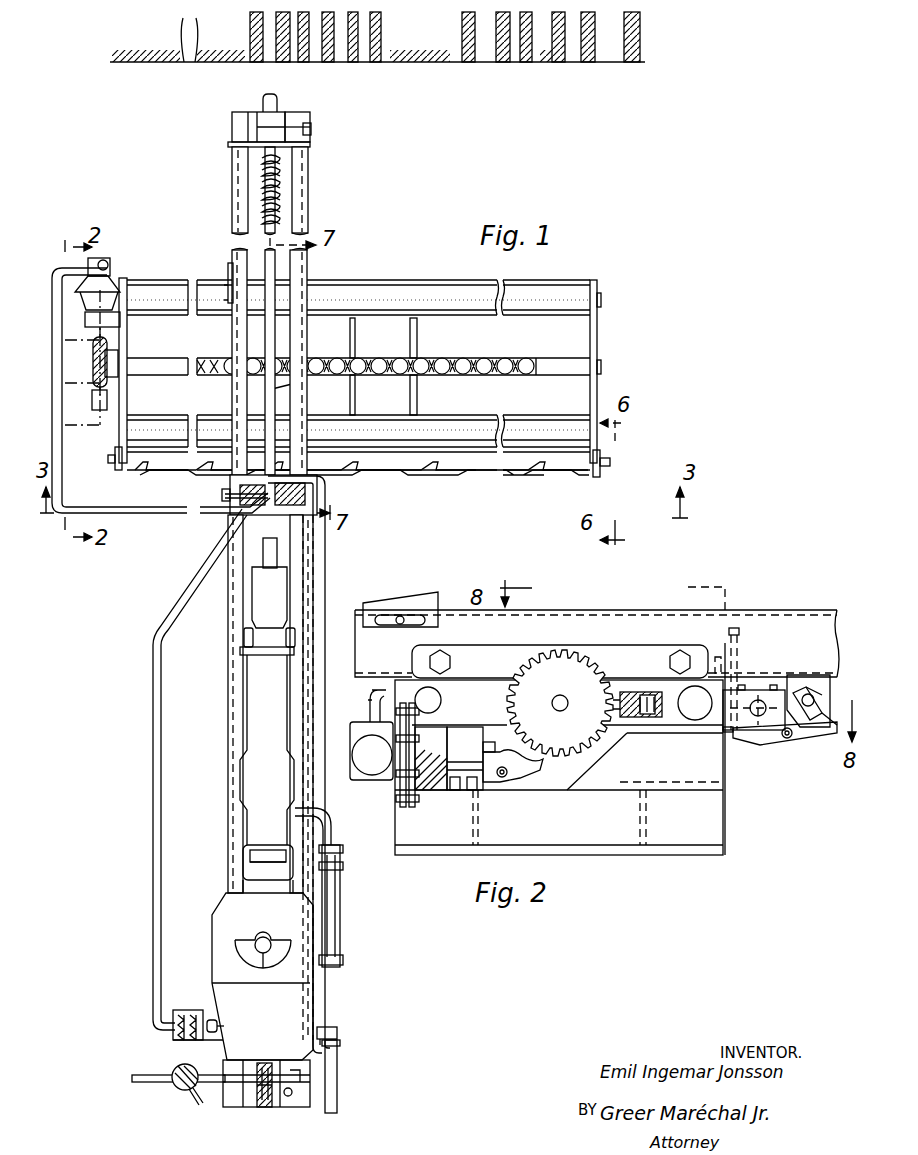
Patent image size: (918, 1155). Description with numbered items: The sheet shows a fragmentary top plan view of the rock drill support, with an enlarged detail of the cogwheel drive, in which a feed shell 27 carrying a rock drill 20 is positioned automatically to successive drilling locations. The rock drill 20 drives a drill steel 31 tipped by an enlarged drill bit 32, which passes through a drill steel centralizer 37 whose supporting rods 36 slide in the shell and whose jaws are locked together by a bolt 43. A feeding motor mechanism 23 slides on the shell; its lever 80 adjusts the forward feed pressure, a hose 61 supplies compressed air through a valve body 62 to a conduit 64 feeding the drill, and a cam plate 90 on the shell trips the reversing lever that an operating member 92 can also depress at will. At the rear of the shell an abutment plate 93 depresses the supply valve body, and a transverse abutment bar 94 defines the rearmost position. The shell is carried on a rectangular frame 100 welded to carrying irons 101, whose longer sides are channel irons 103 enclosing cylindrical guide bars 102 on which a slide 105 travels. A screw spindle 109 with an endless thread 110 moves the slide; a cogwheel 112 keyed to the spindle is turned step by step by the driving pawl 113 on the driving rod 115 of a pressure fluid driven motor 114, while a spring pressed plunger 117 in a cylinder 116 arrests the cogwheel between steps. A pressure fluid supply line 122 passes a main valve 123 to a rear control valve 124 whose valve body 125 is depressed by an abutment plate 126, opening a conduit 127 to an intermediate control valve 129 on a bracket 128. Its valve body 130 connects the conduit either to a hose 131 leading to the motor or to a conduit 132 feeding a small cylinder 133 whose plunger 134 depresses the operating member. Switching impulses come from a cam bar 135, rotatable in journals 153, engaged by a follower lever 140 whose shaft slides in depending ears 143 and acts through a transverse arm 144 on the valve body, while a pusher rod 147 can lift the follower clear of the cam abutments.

In FIG. 1, the rock drill 20 is at (262, 725).
In FIG. 1, the feeding motor mechanism 23 is at (222, 948).
In FIG. 1, the feed shell 27 is at (322, 578).
In FIG. 2, the feed shell 27 is at (762, 622).
In FIG. 1, the drill steel 31 is at (280, 180).
In FIG. 1, the drill bit 32 is at (268, 104).
In FIG. 2, the supporting rods 36 is at (822, 700).
In FIG. 1, the drill steel centralizer 37 is at (240, 128).
In FIG. 1, the bolt 43 is at (292, 118).
In FIG. 1, the hose 61 is at (337, 1100).
In FIG. 1, the valve body 62 is at (336, 1044).
In FIG. 1, the conduit 64 is at (340, 922).
In FIG. 1, the lever 80 is at (258, 947).
In FIG. 1, the cam plate 90 is at (230, 275).
In FIG. 2, the cam plate 90 is at (400, 600).
In FIG. 1, the operating member 92 is at (222, 1022).
In FIG. 1, the abutment plate 93 is at (300, 1100).
In FIG. 1, the transverse abutment bar 94 is at (250, 1095).
In FIG. 1, the rectangular frame 100 is at (598, 326).
In FIG. 1, the carrying irons 101 is at (398, 346).
In FIG. 2, the carrying irons 101 is at (708, 798).
In FIG. 1, the guide bars 102 is at (398, 298).
In FIG. 1, the channel irons 103 is at (480, 308).
In FIG. 1, the slide 105 is at (292, 390).
In FIG. 1, the screw spindle 109 is at (570, 364).
In FIG. 2, the screw spindle 109 is at (565, 710).
In FIG. 1, the endless thread 110 is at (436, 374).
In FIG. 1, the cogwheel 112 is at (105, 363).
In FIG. 2, the cogwheel 112 is at (580, 680).
In FIG. 2, the driving pawl 113 is at (508, 765).
In FIG. 1, the pressure fluid driven motor 114 is at (105, 290).
In FIG. 2, the pressure fluid driven motor 114 is at (435, 755).
In FIG. 2, the driving rod 115 is at (463, 790).
In FIG. 1, the cylinder 116 is at (108, 400).
In FIG. 2, the cylinder 116 is at (650, 712).
In FIG. 2, the spring pressed plunger 117 is at (630, 705).
In FIG. 1, the pressure fluid supply line 122 is at (148, 1083).
In FIG. 1, the main valve 123 is at (172, 1076).
In FIG. 1, the rear control valve 124 is at (275, 1100).
In FIG. 1, the valve body 125 is at (300, 1076).
In FIG. 1, the abutment plate 126 is at (264, 1066).
In FIG. 1, the conduit 127 is at (320, 802).
In FIG. 2, the bracket 128 is at (800, 688).
In FIG. 1, the intermediate control valve 129 is at (300, 497).
In FIG. 1, the valve body 130 is at (235, 512).
In FIG. 1, the hose 131 is at (145, 514).
In FIG. 1, the conduit 132 is at (161, 684).
In FIG. 1, the small cylinder 133 is at (175, 1015).
In FIG. 1, the plunger 134 is at (186, 1020).
In FIG. 2, the cam bar 135 is at (755, 728).
In FIG. 2, the follower lever 140 is at (770, 745).
In FIG. 2, the depending ears 143 is at (805, 715).
In FIG. 2, the transverse arm 144 is at (790, 740).
In FIG. 2, the pusher rod 147 is at (740, 662).
In FIG. 1, the journals 153 is at (112, 462).